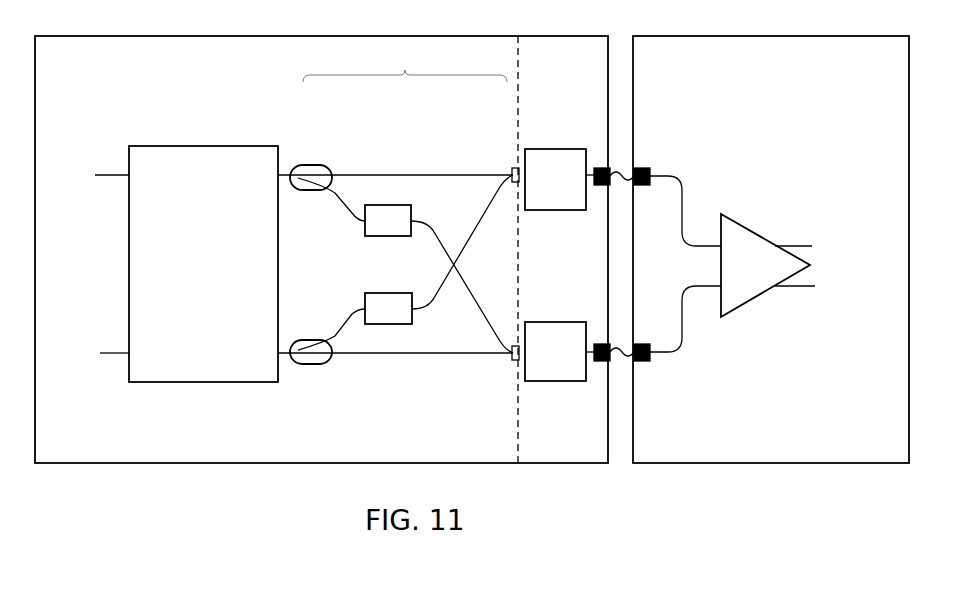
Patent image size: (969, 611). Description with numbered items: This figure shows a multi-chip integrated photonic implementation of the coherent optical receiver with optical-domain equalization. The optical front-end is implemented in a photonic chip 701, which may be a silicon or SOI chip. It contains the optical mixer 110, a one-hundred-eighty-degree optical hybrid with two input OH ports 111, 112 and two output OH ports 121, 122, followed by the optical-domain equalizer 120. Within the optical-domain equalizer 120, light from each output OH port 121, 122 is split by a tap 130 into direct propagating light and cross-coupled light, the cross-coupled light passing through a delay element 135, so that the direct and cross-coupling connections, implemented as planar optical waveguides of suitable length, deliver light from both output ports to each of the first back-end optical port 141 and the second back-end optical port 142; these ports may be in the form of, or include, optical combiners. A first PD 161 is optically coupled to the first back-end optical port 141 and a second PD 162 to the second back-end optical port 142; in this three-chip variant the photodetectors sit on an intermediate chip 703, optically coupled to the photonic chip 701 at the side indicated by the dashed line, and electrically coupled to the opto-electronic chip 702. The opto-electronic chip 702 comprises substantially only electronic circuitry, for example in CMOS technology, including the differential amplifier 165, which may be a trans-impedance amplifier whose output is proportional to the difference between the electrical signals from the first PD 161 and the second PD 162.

The photonic chip 701 is at (48, 78).
The opto-electronic chip 702 is at (836, 72).
The intermediate chip 703 is at (545, 71).
The optical mixer 110 is at (194, 146).
The input OH port 111 is at (125, 180).
The input OH port 112 is at (127, 352).
The optical-domain equalizer 120 is at (405, 62).
The first output OH port 121 is at (282, 173).
The second output OH port 122 is at (279, 357).
The optical coupler / tap 130 is at (327, 167).
The optical delay element 135 is at (385, 205).
The first back-end optical port 141 is at (513, 173).
The second back-end optical port 142 is at (515, 360).
The first PD 161 is at (567, 149).
The second PD 162 is at (550, 381).
The differential amplifier 165 is at (757, 236).